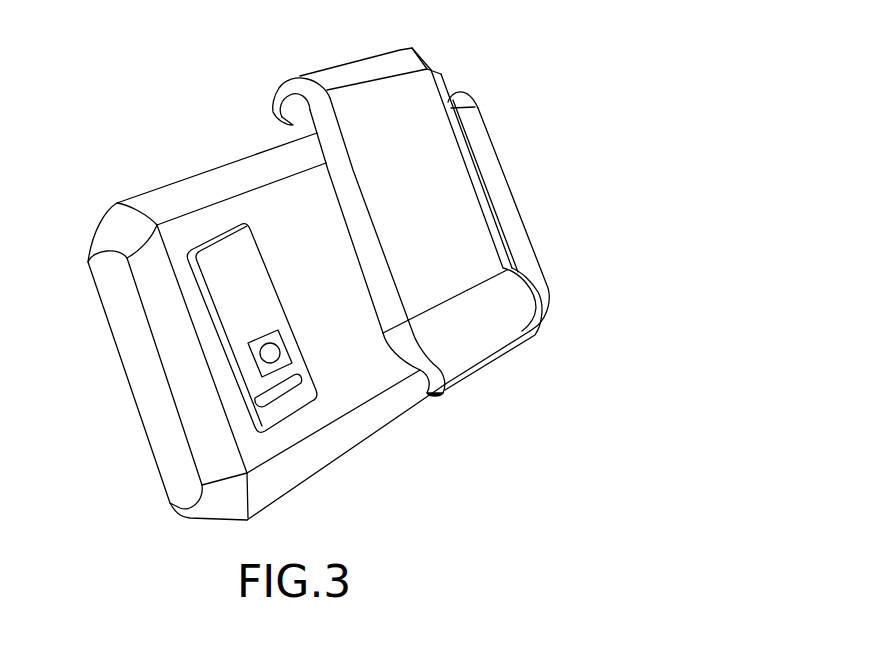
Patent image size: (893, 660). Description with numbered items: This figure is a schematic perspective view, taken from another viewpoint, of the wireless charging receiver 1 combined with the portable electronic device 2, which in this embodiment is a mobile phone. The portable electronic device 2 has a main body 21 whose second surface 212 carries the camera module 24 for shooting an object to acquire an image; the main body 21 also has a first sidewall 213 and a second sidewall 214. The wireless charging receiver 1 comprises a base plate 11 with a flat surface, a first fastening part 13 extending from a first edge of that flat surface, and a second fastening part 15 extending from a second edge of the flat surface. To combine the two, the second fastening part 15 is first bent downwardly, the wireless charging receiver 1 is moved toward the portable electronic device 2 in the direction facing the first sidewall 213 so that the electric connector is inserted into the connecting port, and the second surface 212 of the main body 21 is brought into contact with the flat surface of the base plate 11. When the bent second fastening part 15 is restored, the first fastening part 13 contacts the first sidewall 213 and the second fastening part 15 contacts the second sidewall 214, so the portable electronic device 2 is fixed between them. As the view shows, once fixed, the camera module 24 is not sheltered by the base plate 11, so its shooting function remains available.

The wireless charging receiver 1 is at (368, 44).
The portable electronic device 2 is at (152, 181).
The base plate 11 is at (452, 197).
The first fastening part 13 is at (293, 90).
The second fastening part 15 is at (443, 381).
The main body 21 is at (232, 312).
The camera module 24 is at (268, 355).
The second surface 212 is at (363, 380).
The first sidewall 213 is at (255, 170).
The second sidewall 214 is at (338, 447).